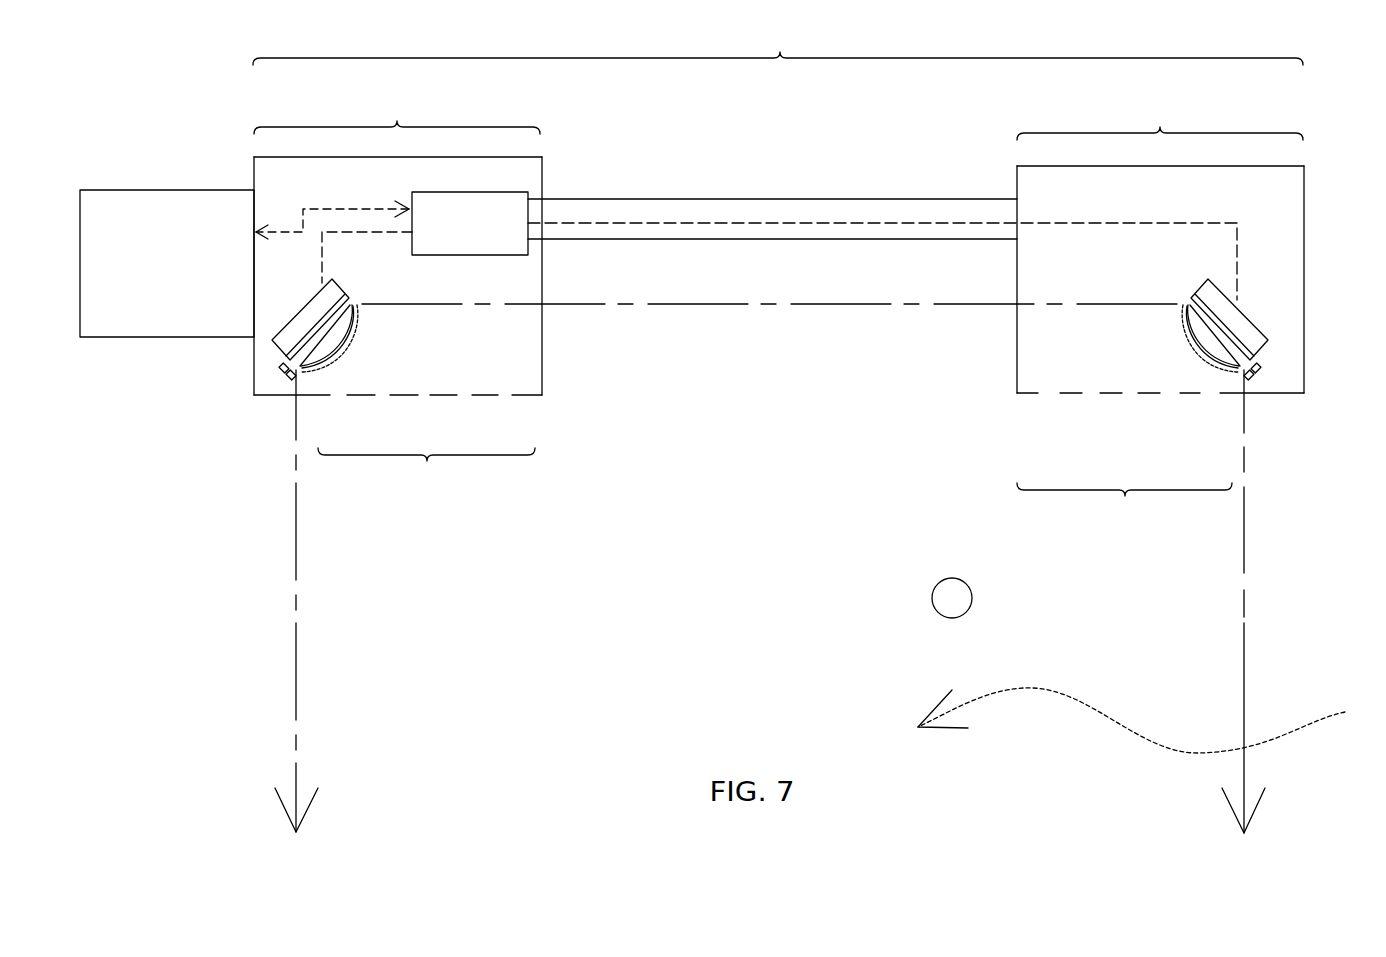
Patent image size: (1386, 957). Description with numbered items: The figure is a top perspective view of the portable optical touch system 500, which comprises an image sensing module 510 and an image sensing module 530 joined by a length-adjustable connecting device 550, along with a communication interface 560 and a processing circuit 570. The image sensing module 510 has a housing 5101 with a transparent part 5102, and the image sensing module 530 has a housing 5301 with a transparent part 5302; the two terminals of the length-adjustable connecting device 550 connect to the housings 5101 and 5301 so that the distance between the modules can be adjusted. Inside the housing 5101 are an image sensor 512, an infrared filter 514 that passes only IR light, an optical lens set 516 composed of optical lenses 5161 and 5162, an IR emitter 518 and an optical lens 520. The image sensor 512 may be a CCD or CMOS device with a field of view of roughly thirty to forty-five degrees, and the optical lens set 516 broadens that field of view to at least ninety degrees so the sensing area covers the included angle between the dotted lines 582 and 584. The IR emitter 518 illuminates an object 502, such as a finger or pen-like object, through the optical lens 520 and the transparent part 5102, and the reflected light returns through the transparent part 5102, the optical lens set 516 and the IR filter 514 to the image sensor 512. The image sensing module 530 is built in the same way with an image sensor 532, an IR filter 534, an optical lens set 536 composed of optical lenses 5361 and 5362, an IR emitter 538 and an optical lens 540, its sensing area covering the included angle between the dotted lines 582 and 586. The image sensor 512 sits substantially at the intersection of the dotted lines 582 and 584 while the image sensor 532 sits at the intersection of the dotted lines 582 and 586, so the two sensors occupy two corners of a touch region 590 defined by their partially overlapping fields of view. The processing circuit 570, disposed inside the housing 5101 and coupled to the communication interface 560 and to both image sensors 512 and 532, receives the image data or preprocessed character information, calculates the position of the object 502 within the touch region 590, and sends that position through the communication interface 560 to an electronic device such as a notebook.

The portable optical touch system 500 is at (778, 42).
The communication interface 560 is at (195, 190).
The image sensing module 510 is at (398, 241).
The housing 5101 is at (541, 157).
The transparent part 5102 is at (530, 397).
The processing circuit 570 is at (518, 192).
The length-adjustable connecting device 550 is at (770, 199).
The image sensing module 530 is at (1160, 245).
The housing 5301 is at (1017, 167).
The transparent part 5302 is at (1017, 333).
The dotted line 582 is at (770, 305).
The image sensor 512 is at (334, 281).
The infrared (IR) filter 514 is at (356, 306).
The optical lens set 516 is at (426, 472).
The optical lens 5161 is at (350, 342).
The optical lens 5162 is at (343, 338).
The IR emitter 518 is at (280, 368).
The optical lens 520 is at (290, 378).
The dotted line 584 is at (300, 560).
The image sensor 532 is at (1266, 345).
The IR filter 534 is at (1255, 362).
The optical lens set 536 is at (1124, 507).
The optical lens 5361 is at (1178, 327).
The optical lens 5362 is at (1213, 367).
The IR emitter 538 is at (1257, 372).
The optical lens 540 is at (1247, 378).
The dotted line 586 is at (1243, 658).
The object 502 is at (932, 590).
The touch region 590 is at (1151, 720).